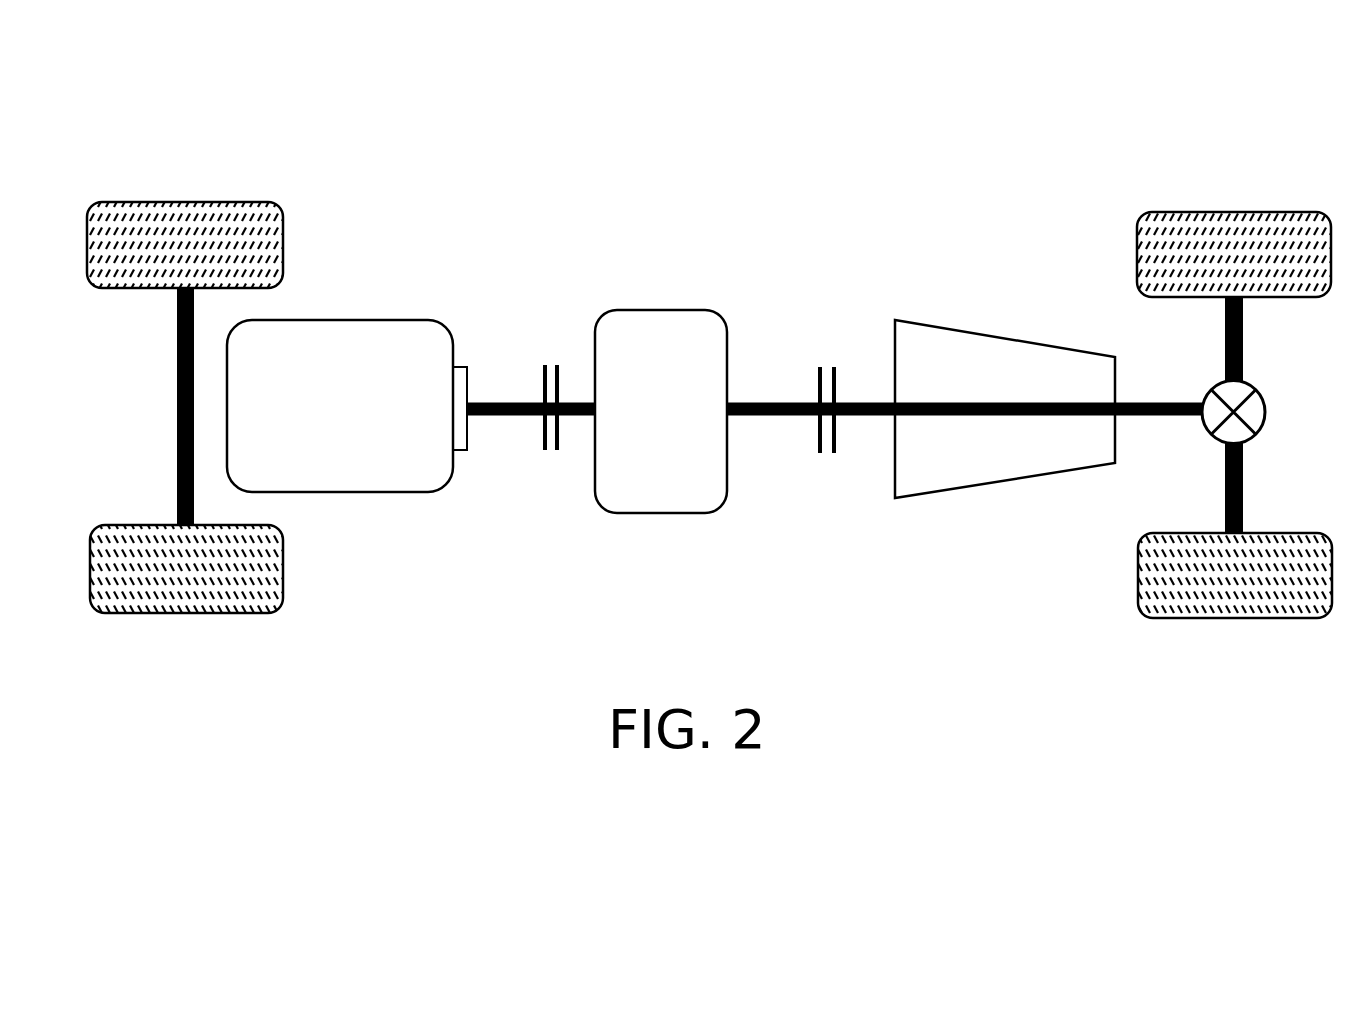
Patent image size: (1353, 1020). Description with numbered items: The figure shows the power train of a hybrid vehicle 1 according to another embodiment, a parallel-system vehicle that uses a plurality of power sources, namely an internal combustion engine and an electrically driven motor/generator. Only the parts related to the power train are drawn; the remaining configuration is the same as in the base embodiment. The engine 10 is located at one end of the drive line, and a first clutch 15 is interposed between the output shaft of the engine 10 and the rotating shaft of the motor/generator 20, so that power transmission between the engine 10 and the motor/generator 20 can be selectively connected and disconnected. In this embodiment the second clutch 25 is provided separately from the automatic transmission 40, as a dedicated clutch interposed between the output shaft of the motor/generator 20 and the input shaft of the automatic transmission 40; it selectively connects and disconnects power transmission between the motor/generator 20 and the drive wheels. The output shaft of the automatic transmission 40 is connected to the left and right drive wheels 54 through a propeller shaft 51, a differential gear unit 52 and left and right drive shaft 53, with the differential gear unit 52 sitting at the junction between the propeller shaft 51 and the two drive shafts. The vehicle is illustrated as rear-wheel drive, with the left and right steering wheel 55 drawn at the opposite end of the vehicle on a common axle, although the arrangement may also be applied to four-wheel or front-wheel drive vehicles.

The hybrid vehicle 1 is at (163, 128).
The engine 10 is at (357, 320).
The first clutch 15 is at (542, 374).
The motor/generator 20 is at (617, 310).
The second clutch 25 is at (816, 376).
The automatic transmission 40 is at (1016, 340).
The propeller shaft 51 is at (1183, 404).
The differential gear unit 52 is at (1267, 409).
The drive shaft 53 is at (1245, 338).
The drive wheels 54 is at (1285, 212).
The steering wheel 55 is at (122, 202).